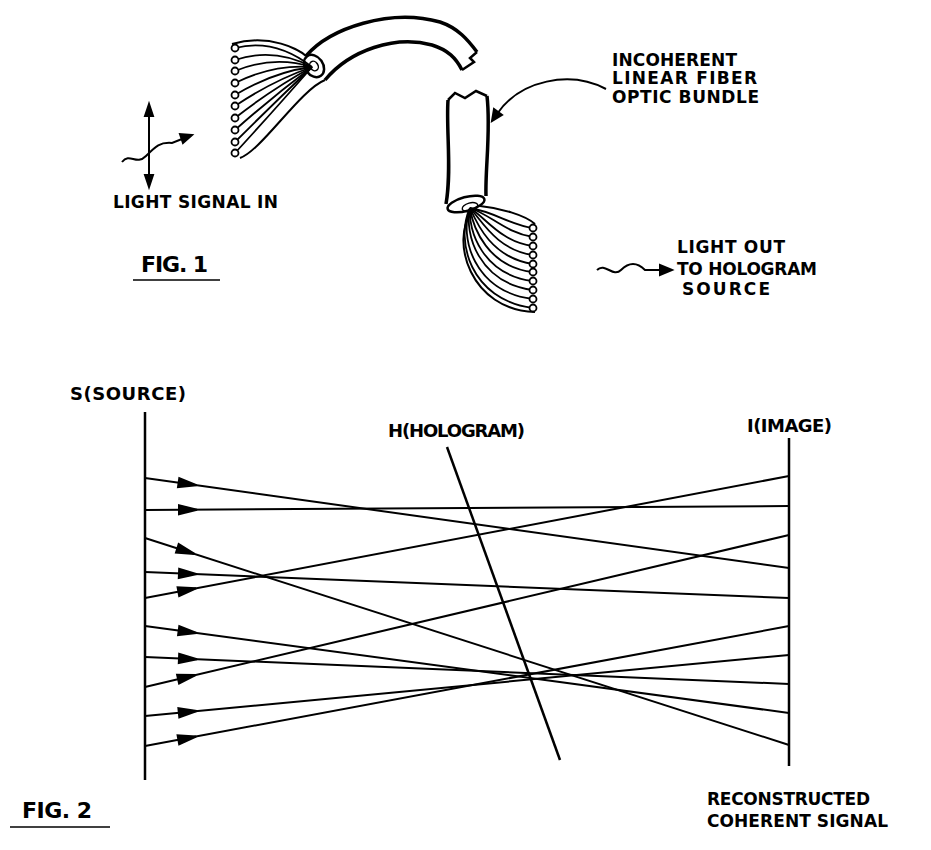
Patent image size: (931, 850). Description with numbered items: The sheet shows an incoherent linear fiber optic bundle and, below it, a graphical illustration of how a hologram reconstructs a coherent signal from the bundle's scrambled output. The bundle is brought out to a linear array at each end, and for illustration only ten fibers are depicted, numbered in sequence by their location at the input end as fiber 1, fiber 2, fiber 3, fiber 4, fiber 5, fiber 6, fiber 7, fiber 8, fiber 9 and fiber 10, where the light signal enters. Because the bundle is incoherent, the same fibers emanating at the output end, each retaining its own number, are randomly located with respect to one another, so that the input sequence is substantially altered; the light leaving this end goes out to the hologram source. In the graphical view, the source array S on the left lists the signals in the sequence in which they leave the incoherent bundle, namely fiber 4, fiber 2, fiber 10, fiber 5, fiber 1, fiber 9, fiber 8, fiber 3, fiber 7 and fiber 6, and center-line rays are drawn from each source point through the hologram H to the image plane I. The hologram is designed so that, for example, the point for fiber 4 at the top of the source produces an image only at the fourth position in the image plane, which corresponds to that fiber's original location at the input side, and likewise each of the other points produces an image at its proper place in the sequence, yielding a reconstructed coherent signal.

In FIG. 1, the fiber 1 is at (231, 50).
In FIG. 2, the fiber 1 is at (467, 537).
In FIG. 1, the fiber 2 is at (231, 62).
In FIG. 2, the fiber 2 is at (467, 508).
In FIG. 1, the fiber 3 is at (231, 73).
In FIG. 2, the fiber 3 is at (467, 611).
In FIG. 1, the fiber 4 is at (231, 85).
In FIG. 2, the fiber 4 is at (467, 523).
In FIG. 1, the fiber 5 is at (231, 97).
In FIG. 2, the fiber 5 is at (467, 585).
In FIG. 1, the fiber 6 is at (231, 108).
In FIG. 2, the fiber 6 is at (467, 686).
In FIG. 1, the fiber 7 is at (231, 120).
In FIG. 2, the fiber 7 is at (467, 685).
In FIG. 1, the fiber 8 is at (231, 132).
In FIG. 2, the fiber 8 is at (467, 670).
In FIG. 1, the fiber 9 is at (231, 144).
In FIG. 2, the fiber 9 is at (467, 669).
In FIG. 1, the fiber 10 is at (231, 154).
In FIG. 2, the fiber 10 is at (466, 641).